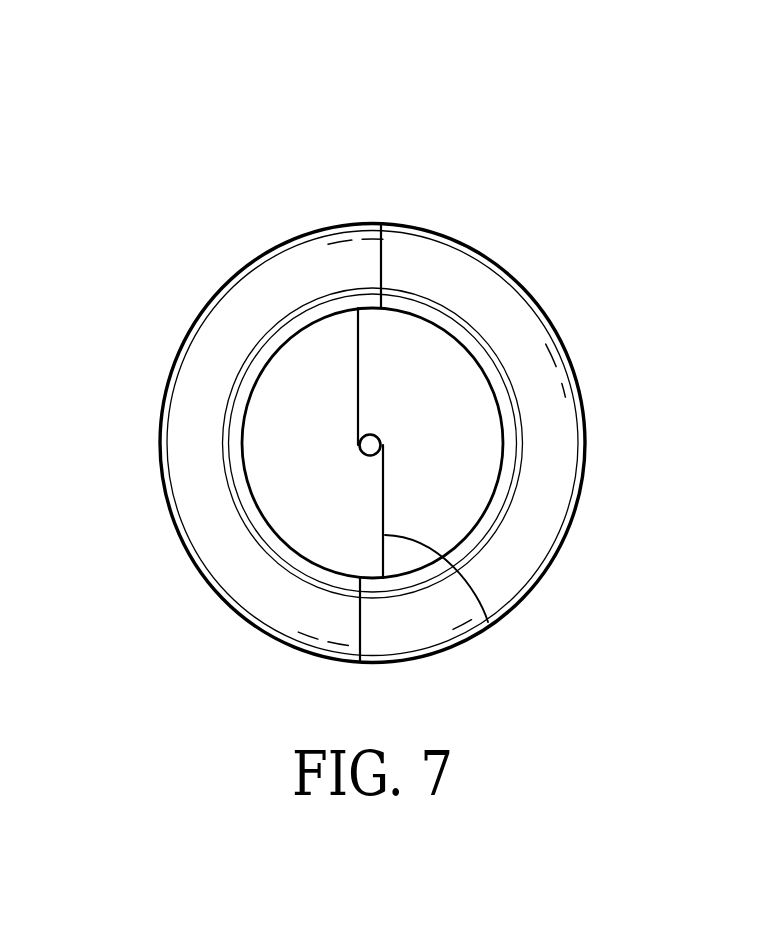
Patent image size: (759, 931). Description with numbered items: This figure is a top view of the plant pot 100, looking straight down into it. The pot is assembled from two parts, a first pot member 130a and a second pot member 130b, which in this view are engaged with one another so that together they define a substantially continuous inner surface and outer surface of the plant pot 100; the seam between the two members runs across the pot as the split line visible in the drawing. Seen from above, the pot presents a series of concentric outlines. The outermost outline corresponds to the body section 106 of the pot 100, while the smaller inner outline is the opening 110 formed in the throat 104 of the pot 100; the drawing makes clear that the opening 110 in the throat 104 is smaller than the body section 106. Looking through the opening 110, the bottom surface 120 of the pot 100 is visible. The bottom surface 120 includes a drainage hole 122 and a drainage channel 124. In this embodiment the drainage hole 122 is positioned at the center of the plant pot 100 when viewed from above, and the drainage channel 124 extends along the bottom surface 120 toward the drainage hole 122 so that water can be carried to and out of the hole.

The plant pot 100 is at (390, 116).
The throat 104 is at (433, 300).
The body section 106 is at (550, 392).
The opening 110 is at (323, 350).
The bottom surface 120 is at (275, 447).
The drainage hole 122 is at (372, 443).
The drainage channel 124 is at (488, 622).
The first pot member 130a is at (218, 332).
The second pot member 130b is at (538, 522).